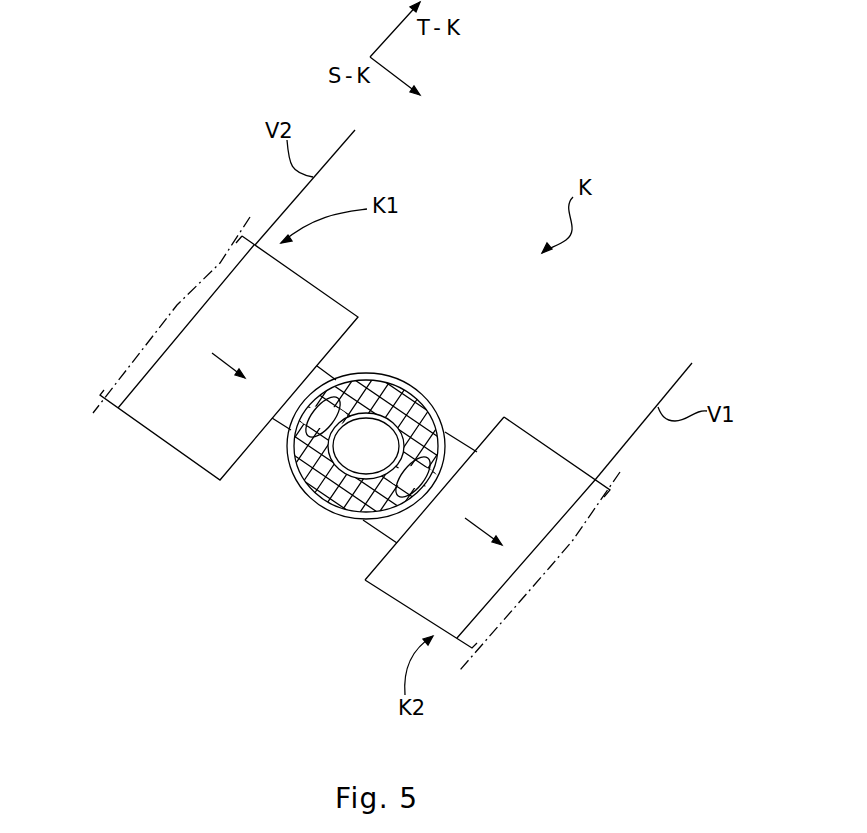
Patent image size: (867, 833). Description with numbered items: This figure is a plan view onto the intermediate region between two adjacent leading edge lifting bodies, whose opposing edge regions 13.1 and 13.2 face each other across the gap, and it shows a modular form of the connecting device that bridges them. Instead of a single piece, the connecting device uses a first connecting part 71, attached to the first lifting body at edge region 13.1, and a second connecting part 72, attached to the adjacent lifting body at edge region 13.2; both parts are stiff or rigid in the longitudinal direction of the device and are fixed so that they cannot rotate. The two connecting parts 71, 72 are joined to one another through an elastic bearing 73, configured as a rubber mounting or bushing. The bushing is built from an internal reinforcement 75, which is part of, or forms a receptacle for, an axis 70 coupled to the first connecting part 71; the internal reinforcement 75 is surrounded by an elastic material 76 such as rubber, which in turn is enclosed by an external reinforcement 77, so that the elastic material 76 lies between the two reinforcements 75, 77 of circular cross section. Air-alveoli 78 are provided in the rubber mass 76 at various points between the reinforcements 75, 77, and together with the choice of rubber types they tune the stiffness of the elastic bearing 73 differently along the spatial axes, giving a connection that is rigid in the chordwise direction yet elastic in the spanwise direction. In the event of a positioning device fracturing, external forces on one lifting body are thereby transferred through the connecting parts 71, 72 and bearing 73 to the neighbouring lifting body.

The edge region 13.1 is at (153, 415).
The edge region 13.2 is at (548, 457).
The axis 70 is at (369, 407).
The first connecting part 71 is at (307, 393).
The second connecting part 72 is at (457, 447).
The elastic bearing 73 is at (295, 493).
The internal reinforcement 75 is at (364, 480).
The elastic material 76 is at (317, 503).
The external reinforcement 77 is at (422, 390).
The air-alveoli 78 is at (288, 443).